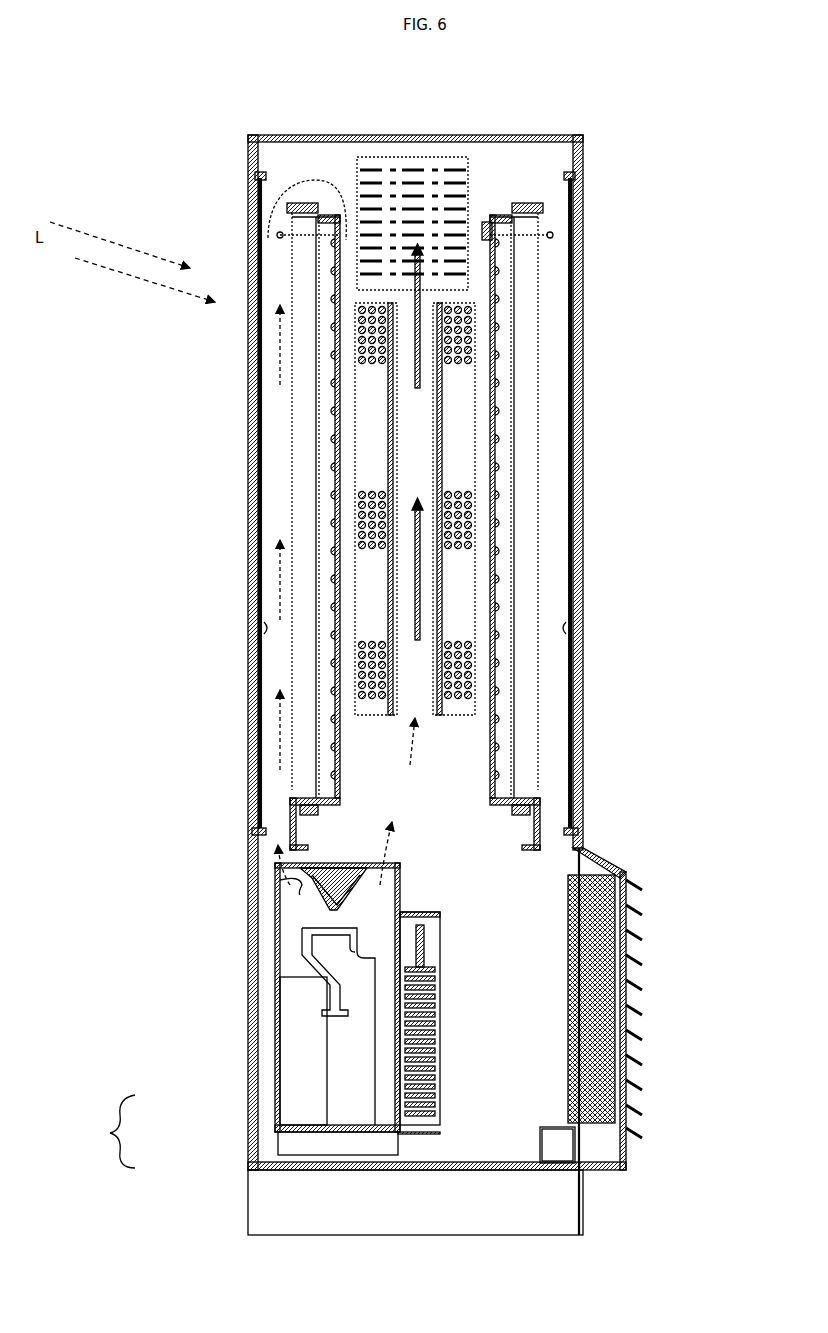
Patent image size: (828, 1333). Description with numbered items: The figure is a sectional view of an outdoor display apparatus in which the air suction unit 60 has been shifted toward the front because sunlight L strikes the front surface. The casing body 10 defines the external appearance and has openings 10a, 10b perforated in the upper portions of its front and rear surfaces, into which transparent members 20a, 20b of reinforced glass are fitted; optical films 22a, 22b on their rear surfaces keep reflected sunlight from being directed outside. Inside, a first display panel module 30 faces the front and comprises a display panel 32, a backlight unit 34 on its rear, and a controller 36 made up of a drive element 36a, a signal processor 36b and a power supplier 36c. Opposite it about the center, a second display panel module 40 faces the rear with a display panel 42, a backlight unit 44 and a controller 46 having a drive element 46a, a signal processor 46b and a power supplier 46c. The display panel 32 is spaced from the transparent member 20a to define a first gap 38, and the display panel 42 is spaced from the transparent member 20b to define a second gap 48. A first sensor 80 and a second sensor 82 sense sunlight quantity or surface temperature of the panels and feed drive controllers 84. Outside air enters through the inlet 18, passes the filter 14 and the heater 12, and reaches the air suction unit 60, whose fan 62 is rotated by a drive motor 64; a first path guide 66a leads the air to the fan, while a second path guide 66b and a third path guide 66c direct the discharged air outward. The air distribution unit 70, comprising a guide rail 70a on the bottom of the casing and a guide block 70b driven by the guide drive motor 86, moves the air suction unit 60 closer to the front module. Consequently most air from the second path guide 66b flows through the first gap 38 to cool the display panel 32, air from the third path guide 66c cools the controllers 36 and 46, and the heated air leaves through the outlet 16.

The casing body 10 is at (586, 133).
The opening 10a is at (256, 176).
The opening 10b is at (574, 176).
The heater 12 is at (430, 1132).
The filter 14 is at (615, 1060).
The outlet 16 is at (418, 157).
The inlet 18 is at (632, 897).
The transparent member 20a is at (262, 575).
The transparent member 20b is at (570, 575).
The optical film 22a is at (266, 628).
The optical film 22b is at (562, 628).
The first display panel module 30 is at (255, 526).
The display panel 32 is at (292, 330).
The backlight unit 34 is at (337, 720).
The controller 36 is at (293, 403).
The drive element 36a is at (388, 395).
The signal processor 36b is at (388, 525).
The power supplier 36c is at (385, 660).
The first gap 38 is at (325, 760).
The second display panel module 40 is at (574, 526).
The display panel 42 is at (538, 330).
The backlight unit 44 is at (493, 720).
The controller 46 is at (535, 403).
The drive element 46a is at (442, 395).
The signal processor 46b is at (442, 525).
The power supplier 46c is at (445, 660).
The second gap 48 is at (505, 760).
The air suction unit 60 is at (397, 974).
The fan 62 is at (305, 940).
The drive motor 64 is at (300, 1015).
The first path guide 66a is at (395, 1008).
The second path guide 66b is at (290, 885).
The third path guide 66c is at (375, 885).
The air distribution unit 70 is at (110, 1133).
The guide rail 70a is at (262, 1160).
The guide block 70b is at (272, 1133).
The first sensor 80 is at (278, 233).
The second sensor 82 is at (553, 235).
The drive controller 84 is at (345, 178).
The guide drive motor 86 is at (578, 1172).